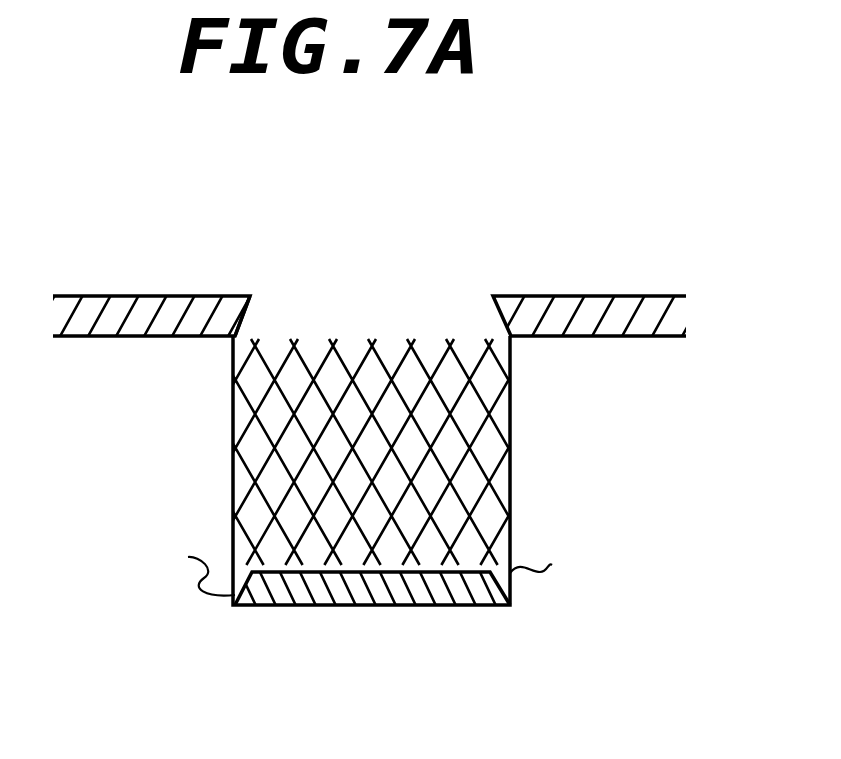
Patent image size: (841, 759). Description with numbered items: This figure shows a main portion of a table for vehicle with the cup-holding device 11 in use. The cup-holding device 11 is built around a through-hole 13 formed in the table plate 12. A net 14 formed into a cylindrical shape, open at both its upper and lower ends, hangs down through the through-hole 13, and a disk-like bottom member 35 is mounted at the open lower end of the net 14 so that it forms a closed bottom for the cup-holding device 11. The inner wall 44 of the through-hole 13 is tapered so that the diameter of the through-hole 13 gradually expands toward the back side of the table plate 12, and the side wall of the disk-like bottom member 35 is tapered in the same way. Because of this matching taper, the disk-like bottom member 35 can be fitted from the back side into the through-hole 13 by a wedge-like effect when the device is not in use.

The cup-holding device 11 is at (190, 450).
The table plate 12 is at (618, 310).
The through-hole 13 is at (403, 300).
The net 14 is at (506, 485).
The disk-like bottom member 35 is at (400, 606).
The inner wall 44 is at (250, 304).